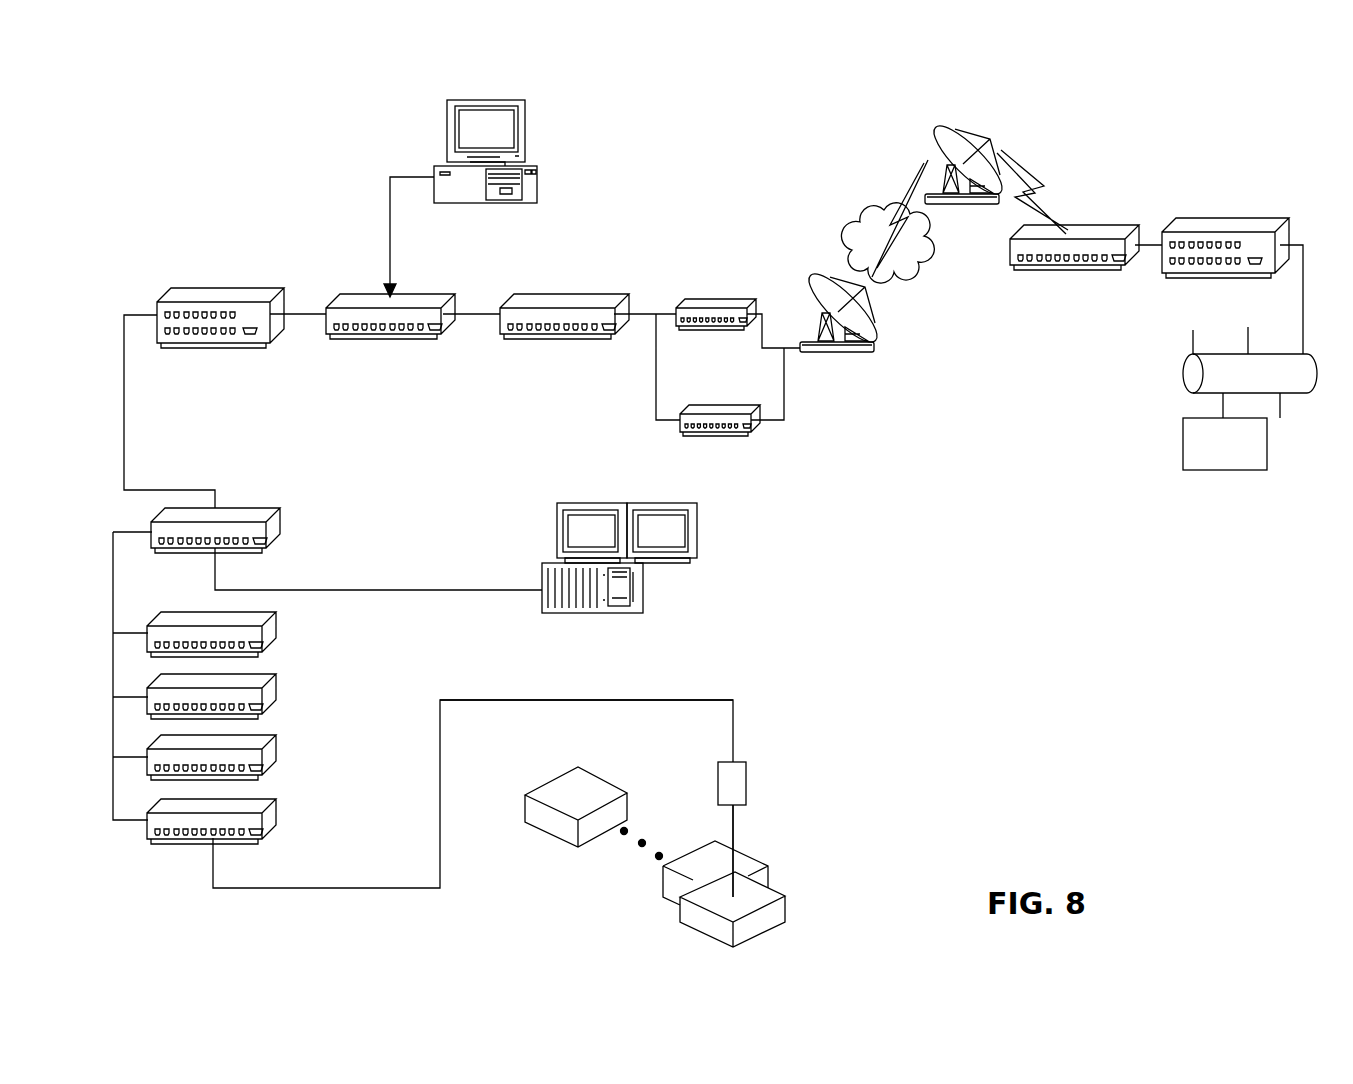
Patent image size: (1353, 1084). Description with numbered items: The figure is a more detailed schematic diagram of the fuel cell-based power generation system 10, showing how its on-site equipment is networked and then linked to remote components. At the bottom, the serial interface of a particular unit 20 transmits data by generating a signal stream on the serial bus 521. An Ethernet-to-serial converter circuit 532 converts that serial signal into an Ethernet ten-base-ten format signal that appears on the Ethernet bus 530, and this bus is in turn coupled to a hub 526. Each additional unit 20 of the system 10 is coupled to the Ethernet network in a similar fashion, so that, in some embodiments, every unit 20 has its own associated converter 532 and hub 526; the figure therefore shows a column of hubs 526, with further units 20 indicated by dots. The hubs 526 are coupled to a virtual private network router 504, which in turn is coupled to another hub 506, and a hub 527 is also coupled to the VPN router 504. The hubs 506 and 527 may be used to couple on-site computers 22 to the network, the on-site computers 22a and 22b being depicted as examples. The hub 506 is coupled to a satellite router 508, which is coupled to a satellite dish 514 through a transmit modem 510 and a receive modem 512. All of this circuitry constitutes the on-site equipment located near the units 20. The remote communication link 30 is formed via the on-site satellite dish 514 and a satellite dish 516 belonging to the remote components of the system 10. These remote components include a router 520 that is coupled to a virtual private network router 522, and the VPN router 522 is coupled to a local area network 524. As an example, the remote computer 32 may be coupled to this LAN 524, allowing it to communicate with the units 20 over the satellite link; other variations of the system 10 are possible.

The system 10 is at (804, 192).
The unit 20 is at (785, 900).
The on-site computer 22 is at (603, 356).
The on-site computer 22a is at (487, 203).
The on-site computer 22b is at (697, 530).
The remote communication link 30 is at (890, 272).
The remote computer 32 is at (1183, 443).
The virtual private network router 504 is at (222, 297).
The hub 506 is at (430, 297).
The satellite router 508 is at (567, 297).
The transmit modem 510 is at (722, 302).
The receive modem 512 is at (722, 433).
The satellite dish 514 is at (880, 352).
The satellite dish 516 is at (990, 135).
The router 520 is at (1077, 267).
The serial bus 521 is at (733, 835).
The virtual private network router 522 is at (1223, 225).
The local area network 524 is at (1183, 370).
The hub 526 is at (283, 817).
The hub 527 is at (285, 530).
The Ethernet bus 530 is at (673, 695).
The Ethernet-to-serial converter circuit 532 is at (747, 783).